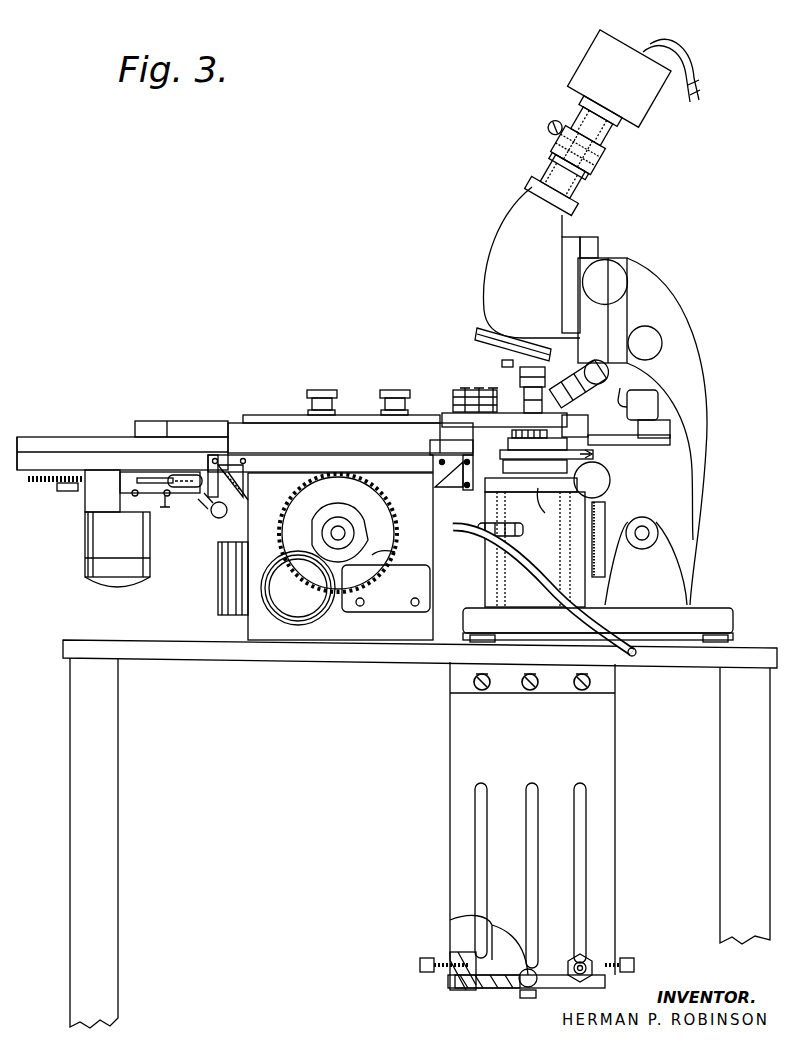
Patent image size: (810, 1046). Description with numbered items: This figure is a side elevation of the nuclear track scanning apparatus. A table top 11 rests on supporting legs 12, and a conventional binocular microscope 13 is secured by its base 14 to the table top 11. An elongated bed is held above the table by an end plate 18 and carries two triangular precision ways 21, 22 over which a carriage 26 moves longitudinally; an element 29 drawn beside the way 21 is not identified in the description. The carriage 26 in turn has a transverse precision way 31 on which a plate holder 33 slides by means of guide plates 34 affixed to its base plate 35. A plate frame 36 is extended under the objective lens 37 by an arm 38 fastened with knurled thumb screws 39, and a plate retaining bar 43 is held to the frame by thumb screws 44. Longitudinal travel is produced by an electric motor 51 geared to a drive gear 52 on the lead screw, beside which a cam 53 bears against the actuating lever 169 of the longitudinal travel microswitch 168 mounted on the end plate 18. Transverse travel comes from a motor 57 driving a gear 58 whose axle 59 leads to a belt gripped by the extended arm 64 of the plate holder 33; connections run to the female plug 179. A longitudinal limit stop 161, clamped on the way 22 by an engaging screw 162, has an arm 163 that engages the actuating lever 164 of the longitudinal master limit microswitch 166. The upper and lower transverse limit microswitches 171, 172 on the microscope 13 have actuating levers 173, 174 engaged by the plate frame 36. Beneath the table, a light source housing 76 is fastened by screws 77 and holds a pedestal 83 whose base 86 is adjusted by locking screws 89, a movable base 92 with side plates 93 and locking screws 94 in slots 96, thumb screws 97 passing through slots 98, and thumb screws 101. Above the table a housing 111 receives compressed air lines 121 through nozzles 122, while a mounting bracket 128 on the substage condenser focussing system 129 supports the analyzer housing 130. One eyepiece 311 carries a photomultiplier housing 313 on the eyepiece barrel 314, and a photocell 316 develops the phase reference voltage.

The table top 11 is at (138, 640).
The supporting legs 12 is at (118, 812).
The binocular microscope 13 is at (670, 270).
The base 14 is at (678, 615).
The end plate 18 is at (365, 640).
The precision way 21 is at (445, 482).
The precision way 22 is at (240, 480).
The carriage 26 is at (47, 428).
The block 29 is at (470, 490).
The precision way 31 is at (72, 437).
The plate holder 33 is at (508, 444).
The guide plates 34 is at (228, 440).
The base plate 35 is at (305, 420).
The plate frame 36 is at (560, 415).
The objective lens 37 is at (522, 372).
The arm 38 is at (380, 405).
The knurled thumb screws 39 is at (318, 390).
The plate retaining bar 43 is at (455, 410).
The knurled thumb screws 44 is at (493, 390).
The electric motor 51 is at (300, 610).
The drive gear 52 is at (300, 534).
The cam 53 is at (362, 523).
The motor 57 is at (85, 565).
The gear 58 is at (52, 483).
The axle 59 is at (72, 492).
The extended arm 64 is at (182, 421).
The light source housing 76 is at (462, 742).
The screws 77 is at (515, 712).
The pedestal 83 is at (490, 925).
The base 86 is at (490, 985).
The locking screws 89 is at (538, 994).
The movable base 92 is at (455, 985).
The side plates 93 is at (455, 952).
The locking screws 94 is at (585, 958).
The slots 96 is at (475, 832).
The thumb screws 97 is at (532, 968).
The slots 98 is at (528, 834).
The thumb screws 101 is at (420, 963).
The housing 111 is at (485, 572).
The compressed air lines 121 is at (520, 572).
The nozzles 122 is at (523, 532).
The mounting bracket 128 is at (594, 456).
The substage condenser focussing system 129 is at (610, 490).
The housing 130 is at (558, 502).
The longitudinal limit stop 161 is at (240, 490).
The engaging screw 162 is at (202, 505).
The arm 163 is at (190, 488).
The actuating lever 164 is at (165, 507).
The longitudinal master limit microswitch 166 is at (130, 484).
The longitudinal travel microswitch 168 is at (378, 602).
The actuating lever 169 is at (395, 552).
The upper transverse limit microswitch 171 is at (670, 432).
The lower transverse limit microswitch 172 is at (658, 408).
The actuating lever 173 is at (582, 445).
The actuating lever 174 is at (639, 393).
The female plug 179 is at (218, 585).
The eyepiece 311 is at (540, 145).
The housing 313 is at (590, 58).
The eyepiece barrel 314 is at (598, 160).
The photocell 316 is at (593, 378).